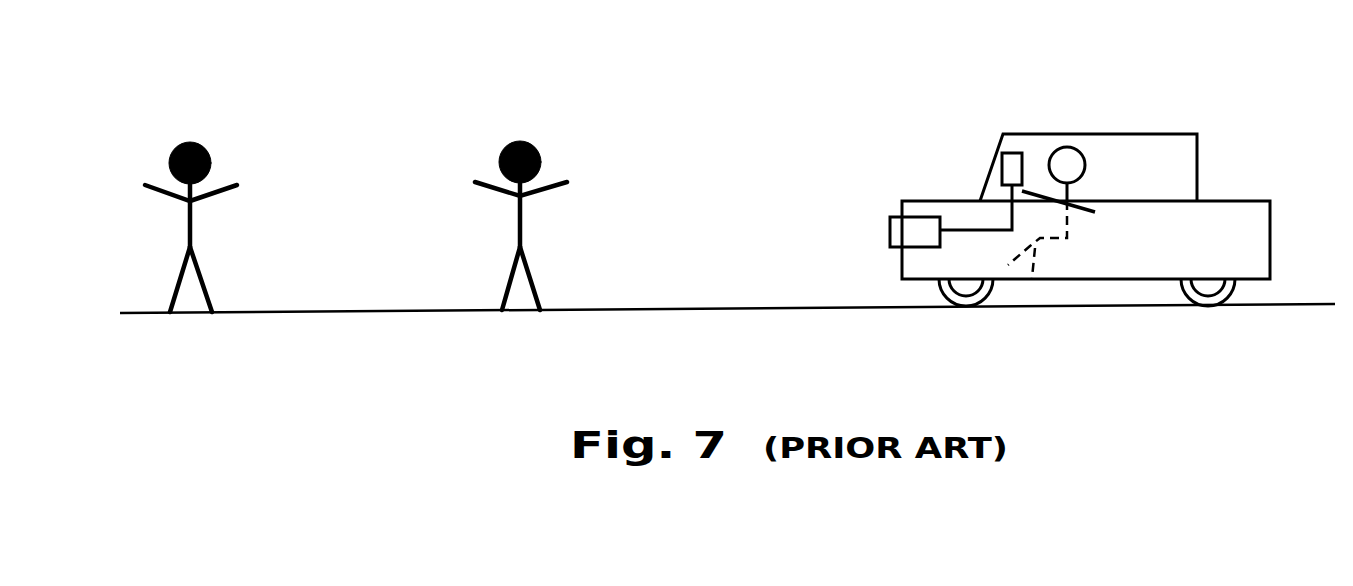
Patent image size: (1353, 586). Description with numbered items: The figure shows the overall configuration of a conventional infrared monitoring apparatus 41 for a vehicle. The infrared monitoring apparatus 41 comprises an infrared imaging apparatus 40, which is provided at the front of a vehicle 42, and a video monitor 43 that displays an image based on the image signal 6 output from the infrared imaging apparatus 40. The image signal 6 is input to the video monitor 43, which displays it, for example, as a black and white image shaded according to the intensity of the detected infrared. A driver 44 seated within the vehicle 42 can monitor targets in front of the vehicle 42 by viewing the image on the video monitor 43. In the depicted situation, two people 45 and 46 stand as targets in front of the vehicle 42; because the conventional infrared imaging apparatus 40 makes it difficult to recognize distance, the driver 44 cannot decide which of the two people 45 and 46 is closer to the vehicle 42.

The image signal 6 is at (948, 230).
The infrared imaging apparatus 40 is at (918, 220).
The infrared monitoring apparatus for a vehicle 41 is at (963, 143).
The vehicle 42 is at (1168, 134).
The video monitor 43 is at (1010, 153).
The driver 44 is at (1067, 147).
The person 45 is at (522, 140).
The person 46 is at (193, 142).